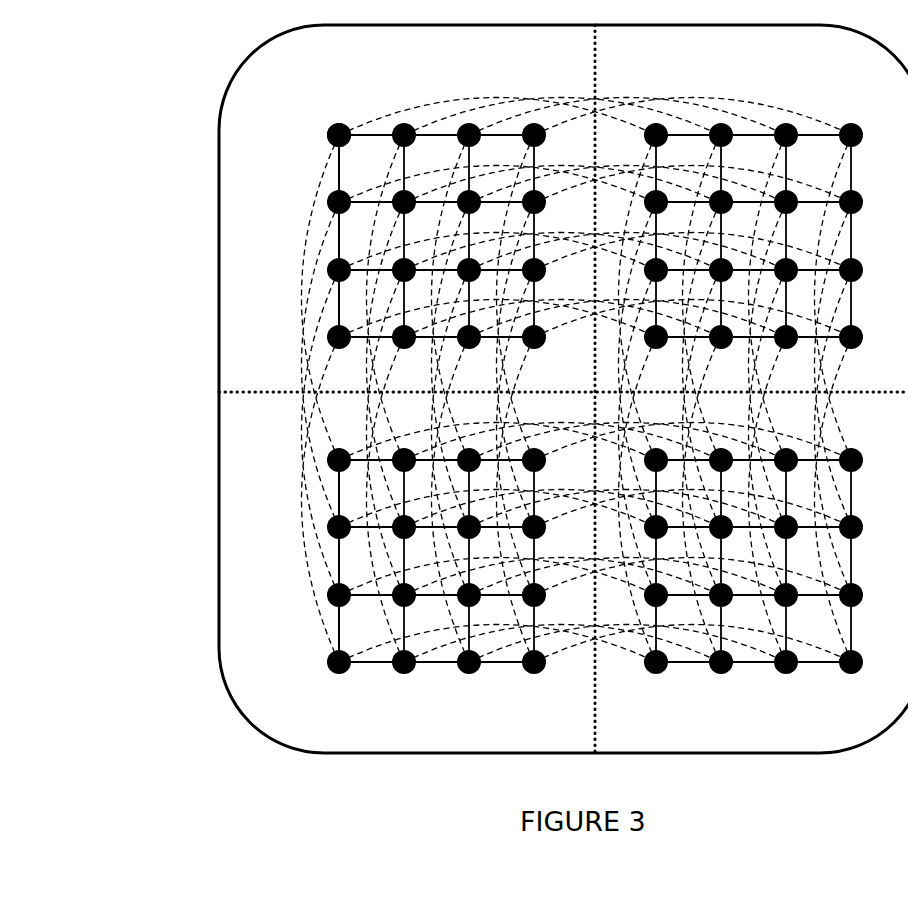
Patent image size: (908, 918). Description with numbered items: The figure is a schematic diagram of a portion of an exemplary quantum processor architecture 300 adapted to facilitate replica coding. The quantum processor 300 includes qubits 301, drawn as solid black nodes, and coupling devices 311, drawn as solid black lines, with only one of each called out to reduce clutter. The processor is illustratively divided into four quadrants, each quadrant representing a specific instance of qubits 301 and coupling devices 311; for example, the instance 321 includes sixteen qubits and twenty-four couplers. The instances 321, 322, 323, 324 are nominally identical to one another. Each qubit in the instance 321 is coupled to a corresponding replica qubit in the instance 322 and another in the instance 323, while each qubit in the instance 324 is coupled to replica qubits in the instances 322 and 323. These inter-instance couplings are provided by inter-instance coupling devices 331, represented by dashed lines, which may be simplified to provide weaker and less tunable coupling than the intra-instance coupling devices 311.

The quantum processor architecture 300 is at (108, 124).
The qubit 301 is at (334, 129).
The coupling device 311 is at (338, 230).
The instance 321 is at (391, 89).
The instance 322 is at (876, 89).
The instance 323 is at (398, 724).
The instance 324 is at (876, 724).
The inter-instance coupling device 331 is at (302, 565).